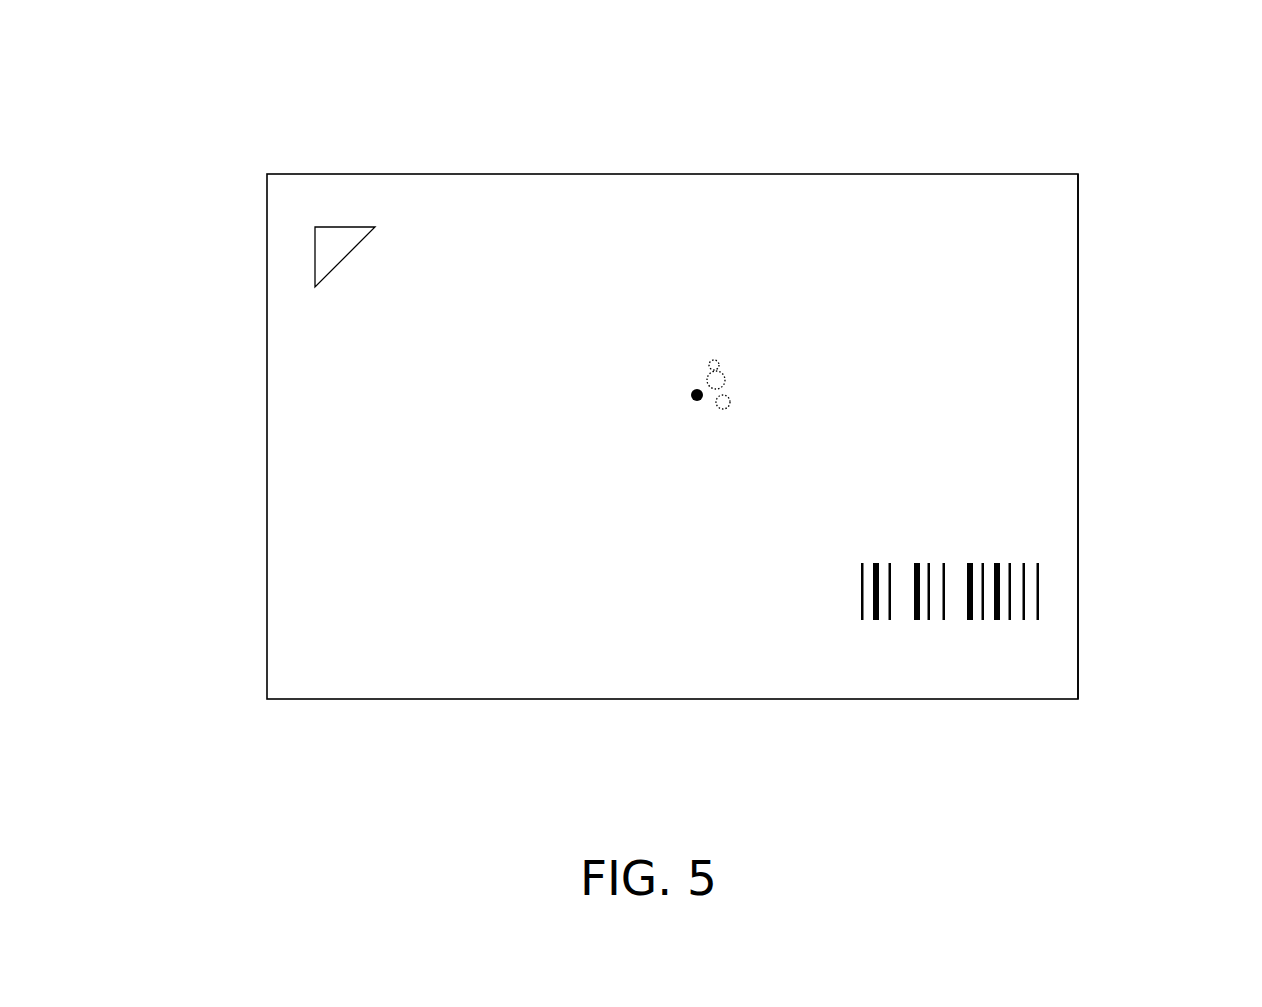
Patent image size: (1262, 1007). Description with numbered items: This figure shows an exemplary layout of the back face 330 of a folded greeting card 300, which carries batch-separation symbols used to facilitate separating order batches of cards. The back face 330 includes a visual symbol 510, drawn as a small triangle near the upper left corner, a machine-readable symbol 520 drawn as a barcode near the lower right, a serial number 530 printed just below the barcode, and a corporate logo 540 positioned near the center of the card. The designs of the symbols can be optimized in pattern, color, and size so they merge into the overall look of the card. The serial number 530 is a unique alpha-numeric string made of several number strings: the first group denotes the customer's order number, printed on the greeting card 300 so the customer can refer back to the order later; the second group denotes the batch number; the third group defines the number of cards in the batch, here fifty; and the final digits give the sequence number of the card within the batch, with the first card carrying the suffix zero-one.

The folded greeting card 300 is at (1120, 138).
The back face 330 is at (1050, 322).
The visual symbol 510 is at (280, 233).
The machine-readable symbol 520 is at (1050, 552).
The serial number 530 is at (1023, 685).
The corporate logo 540 is at (624, 294).